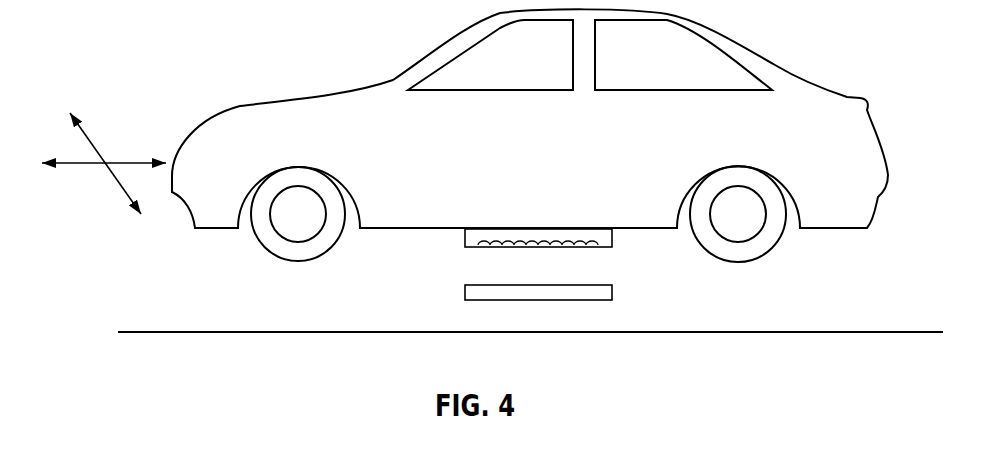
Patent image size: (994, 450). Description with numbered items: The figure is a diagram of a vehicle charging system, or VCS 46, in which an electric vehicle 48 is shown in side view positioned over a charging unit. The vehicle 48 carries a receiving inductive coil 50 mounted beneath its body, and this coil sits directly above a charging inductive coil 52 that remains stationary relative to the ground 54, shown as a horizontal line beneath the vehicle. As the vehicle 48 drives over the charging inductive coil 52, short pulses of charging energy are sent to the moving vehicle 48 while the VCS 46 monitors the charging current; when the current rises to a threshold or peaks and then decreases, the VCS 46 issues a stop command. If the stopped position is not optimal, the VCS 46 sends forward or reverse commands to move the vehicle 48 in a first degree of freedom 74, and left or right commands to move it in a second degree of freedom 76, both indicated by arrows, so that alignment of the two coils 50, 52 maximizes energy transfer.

The VCS 46 is at (191, 52).
The electric vehicle 48 is at (862, 133).
The receiving inductive coil 50 is at (612, 233).
The charging inductive coil 52 is at (600, 290).
The ground 54 is at (810, 331).
The first degree of freedom 74 is at (88, 168).
The second degree of freedom 76 is at (90, 140).